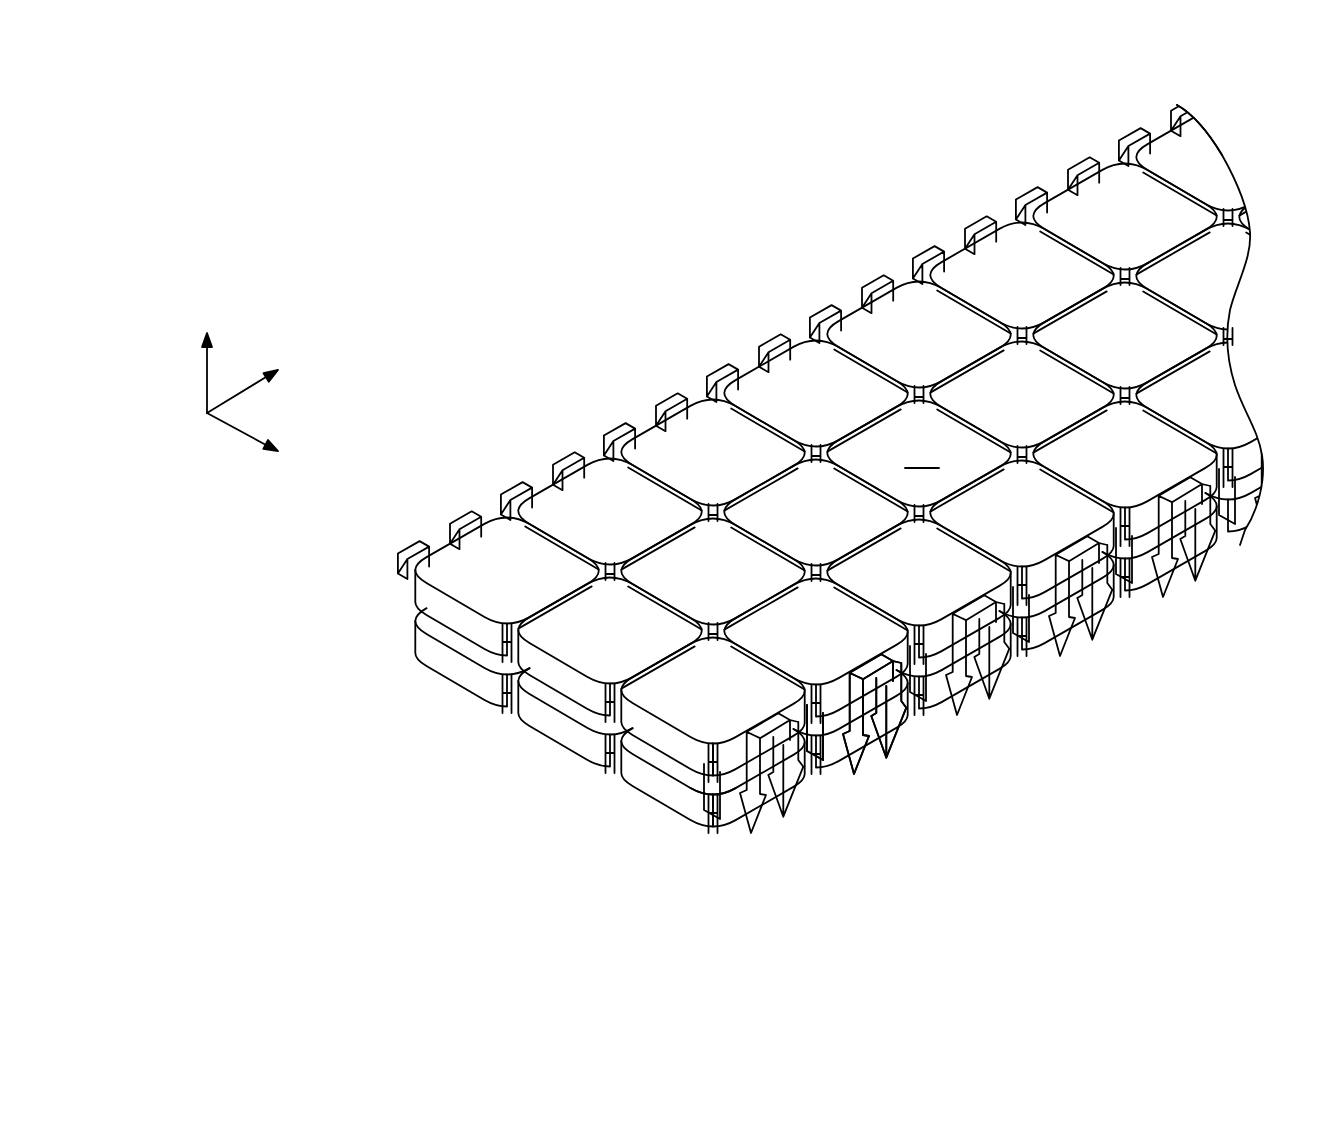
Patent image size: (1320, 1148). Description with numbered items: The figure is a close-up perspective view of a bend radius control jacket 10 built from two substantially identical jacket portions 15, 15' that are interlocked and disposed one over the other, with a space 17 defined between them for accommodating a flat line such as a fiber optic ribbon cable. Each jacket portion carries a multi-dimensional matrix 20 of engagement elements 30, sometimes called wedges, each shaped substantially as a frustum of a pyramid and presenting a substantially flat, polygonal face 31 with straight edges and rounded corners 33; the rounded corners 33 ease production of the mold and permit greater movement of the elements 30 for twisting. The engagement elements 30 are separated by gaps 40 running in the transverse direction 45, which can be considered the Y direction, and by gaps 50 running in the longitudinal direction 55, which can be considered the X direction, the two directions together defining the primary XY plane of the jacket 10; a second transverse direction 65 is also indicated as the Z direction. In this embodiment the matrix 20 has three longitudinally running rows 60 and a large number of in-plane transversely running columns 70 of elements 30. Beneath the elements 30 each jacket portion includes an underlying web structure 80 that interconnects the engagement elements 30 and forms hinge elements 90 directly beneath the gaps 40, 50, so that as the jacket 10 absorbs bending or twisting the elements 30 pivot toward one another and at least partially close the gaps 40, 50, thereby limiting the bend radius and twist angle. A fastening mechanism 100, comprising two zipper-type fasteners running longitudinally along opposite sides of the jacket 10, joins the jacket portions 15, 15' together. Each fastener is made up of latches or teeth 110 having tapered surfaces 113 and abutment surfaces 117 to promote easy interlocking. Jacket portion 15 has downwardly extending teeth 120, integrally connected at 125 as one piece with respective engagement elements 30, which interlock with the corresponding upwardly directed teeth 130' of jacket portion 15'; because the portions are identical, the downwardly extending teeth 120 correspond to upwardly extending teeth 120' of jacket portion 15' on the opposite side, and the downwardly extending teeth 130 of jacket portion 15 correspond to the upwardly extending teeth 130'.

The control jacket 10 is at (485, 270).
The jacket portion 15 is at (779, 505).
The jacket portion 15' is at (768, 663).
The space 17 is at (653, 762).
The multi-dimensional matrix 20 is at (672, 356).
The engagement element 30 is at (593, 514).
The polygonal face 31 is at (603, 470).
The rounded corner 33 is at (713, 503).
The gap 40 is at (540, 517).
The transverse direction 45 is at (230, 428).
The gap 50 is at (548, 602).
The longitudinal direction 55 is at (243, 386).
The longitudinally running row 60 is at (613, 717).
The second transverse direction 65 is at (205, 372).
The transversely running column 70 is at (700, 727).
The web structure 80 is at (472, 670).
The hinge element 90 is at (541, 715).
The fastening mechanism 100 is at (420, 515).
The latch or tooth 110 is at (810, 792).
The tapered surface 113 is at (1037, 657).
The abutment surface 117 is at (1077, 640).
The downwardly extending tooth 120 is at (888, 743).
The upwardly extending tooth 120' is at (702, 342).
The integral connection 125 is at (845, 678).
The downwardly extending tooth 130 is at (757, 308).
The upwardly directed tooth 130' is at (949, 730).